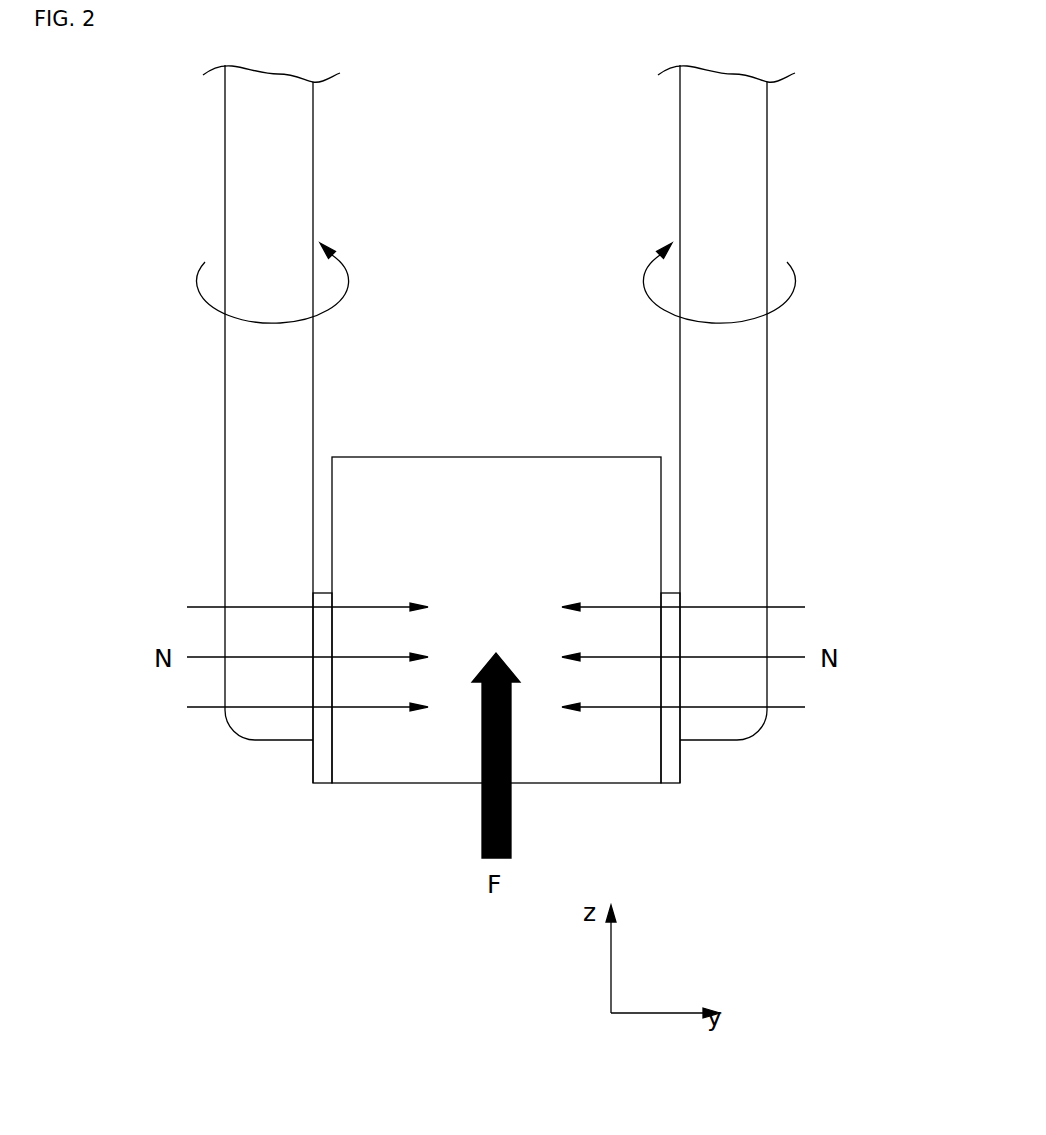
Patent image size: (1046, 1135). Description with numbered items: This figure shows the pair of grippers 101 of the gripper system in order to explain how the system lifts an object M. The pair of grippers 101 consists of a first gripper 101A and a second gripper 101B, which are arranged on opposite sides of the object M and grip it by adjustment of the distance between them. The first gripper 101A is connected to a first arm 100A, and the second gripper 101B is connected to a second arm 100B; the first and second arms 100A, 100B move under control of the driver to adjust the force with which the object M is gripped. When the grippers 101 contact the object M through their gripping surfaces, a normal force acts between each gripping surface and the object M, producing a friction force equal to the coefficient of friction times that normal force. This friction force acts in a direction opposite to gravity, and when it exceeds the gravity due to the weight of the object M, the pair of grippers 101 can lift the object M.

The first arm 100A is at (240, 436).
The second arm 100B is at (753, 437).
The pair of grippers 101 is at (381, 759).
The first gripper 101A is at (320, 786).
The second gripper 101B is at (672, 786).
The object M is at (549, 470).